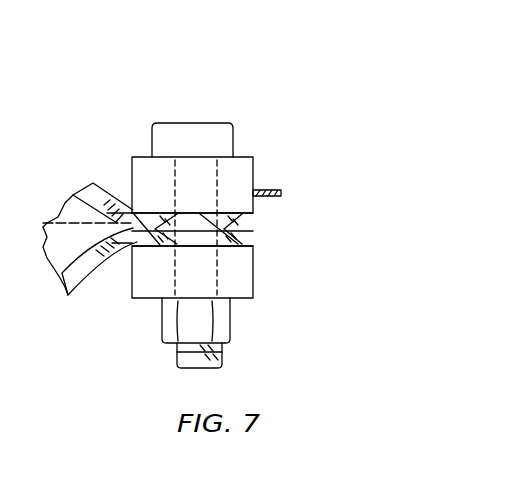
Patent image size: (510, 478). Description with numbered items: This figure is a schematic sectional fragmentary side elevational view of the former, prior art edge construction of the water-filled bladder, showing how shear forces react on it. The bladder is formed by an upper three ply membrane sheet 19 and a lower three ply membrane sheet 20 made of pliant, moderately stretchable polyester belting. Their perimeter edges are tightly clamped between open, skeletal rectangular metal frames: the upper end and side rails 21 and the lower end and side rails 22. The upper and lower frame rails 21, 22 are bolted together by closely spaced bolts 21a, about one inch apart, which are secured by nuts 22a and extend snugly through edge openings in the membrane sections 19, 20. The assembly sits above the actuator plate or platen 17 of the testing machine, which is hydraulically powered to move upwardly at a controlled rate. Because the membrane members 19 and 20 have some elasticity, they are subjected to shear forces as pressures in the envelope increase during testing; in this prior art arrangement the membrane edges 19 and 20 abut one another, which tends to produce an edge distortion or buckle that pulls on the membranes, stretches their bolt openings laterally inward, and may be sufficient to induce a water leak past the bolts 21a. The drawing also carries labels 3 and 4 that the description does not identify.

The tube 3 is at (253, 238).
The bolt 4 is at (173, 250).
The actuator plate or platen 17 is at (173, 258).
The upper membrane section 19 is at (102, 183).
The lower membrane section 20 is at (86, 276).
The upper frame end and side rails 21 is at (281, 193).
The bolts 21a is at (233, 140).
The lower frame end and side rails 22 is at (255, 272).
The nuts 22a is at (240, 320).